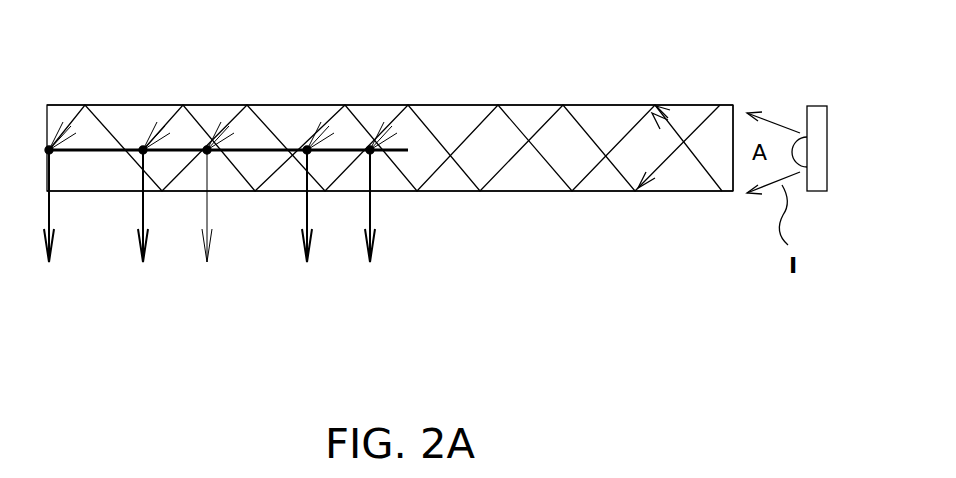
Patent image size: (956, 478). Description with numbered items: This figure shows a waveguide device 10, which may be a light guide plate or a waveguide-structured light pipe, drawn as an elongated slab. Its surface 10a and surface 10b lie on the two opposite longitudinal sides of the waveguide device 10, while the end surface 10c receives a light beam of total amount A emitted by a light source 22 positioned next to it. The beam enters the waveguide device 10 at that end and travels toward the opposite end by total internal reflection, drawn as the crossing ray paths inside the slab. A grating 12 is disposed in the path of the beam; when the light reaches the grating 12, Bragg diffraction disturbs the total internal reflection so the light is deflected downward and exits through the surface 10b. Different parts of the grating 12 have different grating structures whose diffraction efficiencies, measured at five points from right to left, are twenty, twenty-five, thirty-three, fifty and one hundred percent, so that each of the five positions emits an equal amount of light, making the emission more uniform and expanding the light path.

The waveguide device 10 is at (458, 100).
The surface 10a is at (608, 105).
The surface 10b is at (447, 192).
The surface 10c is at (735, 177).
The grating 12 is at (87, 152).
The light source 22 is at (815, 106).